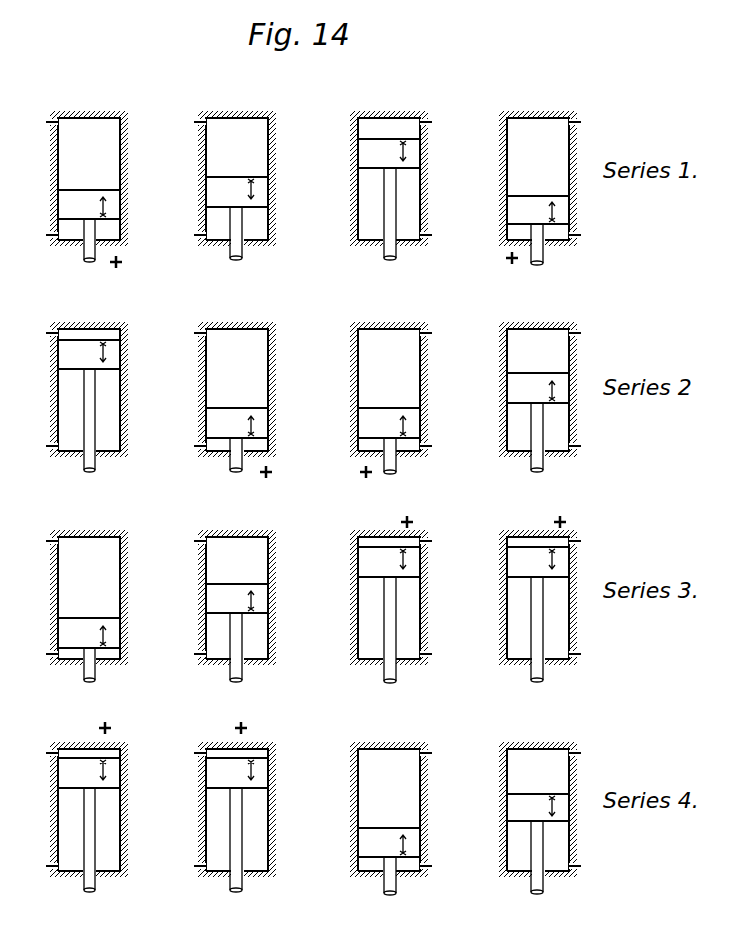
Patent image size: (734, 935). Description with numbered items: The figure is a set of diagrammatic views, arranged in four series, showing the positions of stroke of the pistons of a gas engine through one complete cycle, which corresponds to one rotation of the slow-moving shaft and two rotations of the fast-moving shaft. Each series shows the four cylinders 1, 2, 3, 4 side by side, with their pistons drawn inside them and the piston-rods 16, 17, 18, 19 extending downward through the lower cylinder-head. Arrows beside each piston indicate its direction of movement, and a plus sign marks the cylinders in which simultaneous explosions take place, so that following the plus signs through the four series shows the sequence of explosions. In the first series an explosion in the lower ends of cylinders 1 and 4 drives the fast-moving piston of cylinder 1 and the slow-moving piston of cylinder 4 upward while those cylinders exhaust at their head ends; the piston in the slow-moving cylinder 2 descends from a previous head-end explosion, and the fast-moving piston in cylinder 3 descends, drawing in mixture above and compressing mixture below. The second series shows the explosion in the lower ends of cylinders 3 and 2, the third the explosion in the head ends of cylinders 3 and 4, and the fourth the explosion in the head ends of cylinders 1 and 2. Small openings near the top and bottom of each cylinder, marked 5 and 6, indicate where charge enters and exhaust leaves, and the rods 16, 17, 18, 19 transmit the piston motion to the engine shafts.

The cylinder 1 is at (89, 494).
The cylinder 2 is at (237, 494).
The cylinder 3 is at (389, 494).
The cylinder 4 is at (538, 494).
The inlet port 5 is at (568, 758).
The outlet port 6 is at (568, 861).
The piston-rod 16 is at (102, 557).
The piston-rod 17 is at (248, 552).
The piston-rod 18 is at (402, 534).
The piston-rod 19 is at (550, 562).